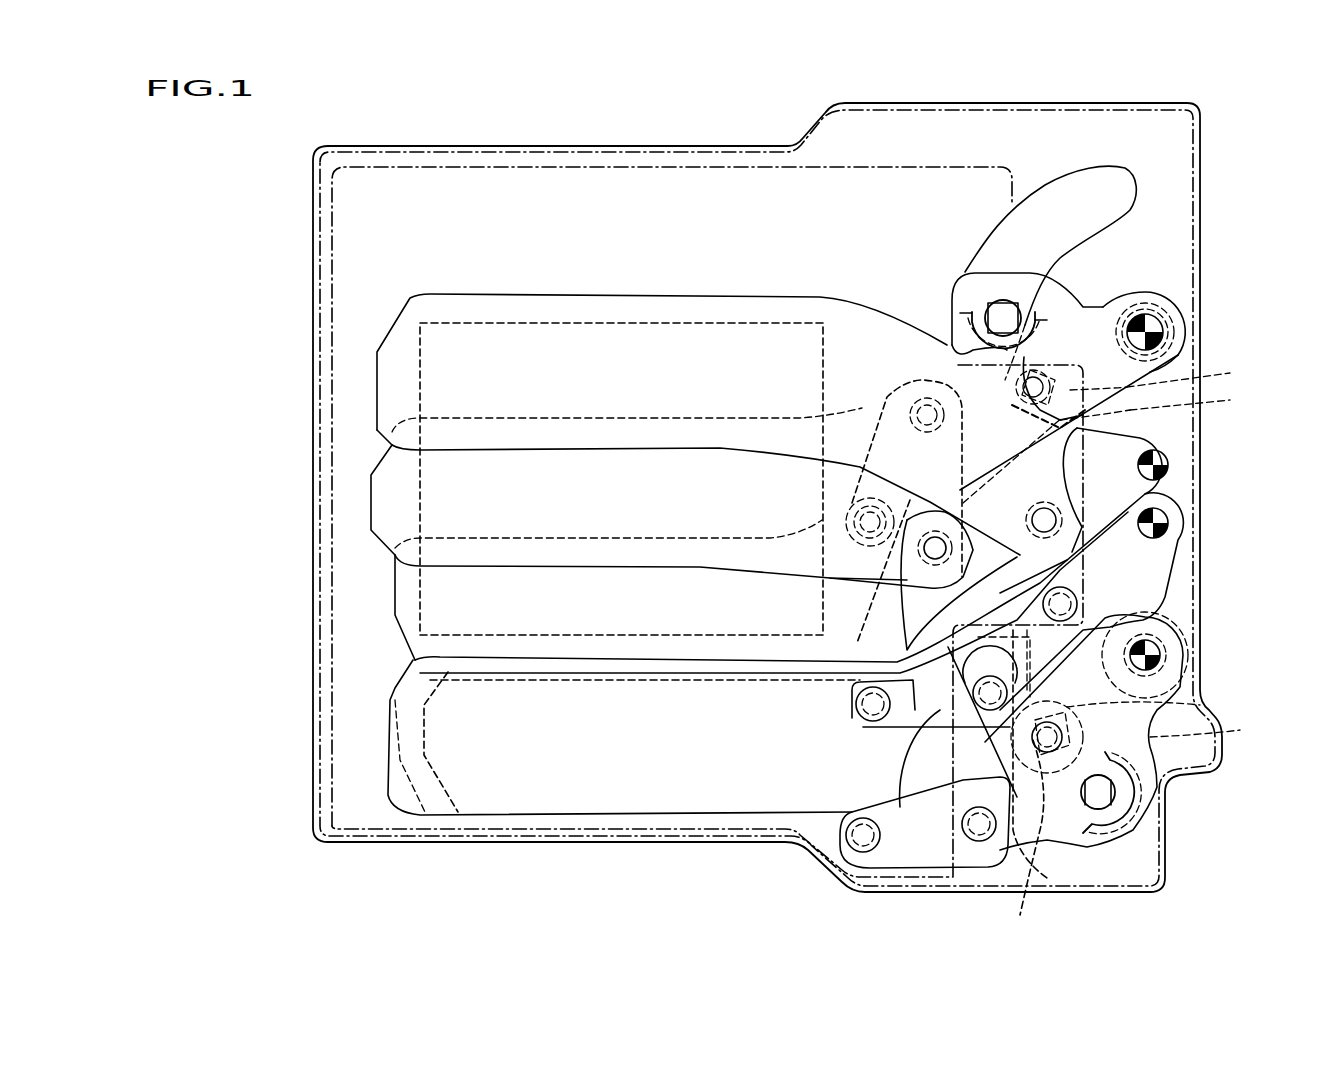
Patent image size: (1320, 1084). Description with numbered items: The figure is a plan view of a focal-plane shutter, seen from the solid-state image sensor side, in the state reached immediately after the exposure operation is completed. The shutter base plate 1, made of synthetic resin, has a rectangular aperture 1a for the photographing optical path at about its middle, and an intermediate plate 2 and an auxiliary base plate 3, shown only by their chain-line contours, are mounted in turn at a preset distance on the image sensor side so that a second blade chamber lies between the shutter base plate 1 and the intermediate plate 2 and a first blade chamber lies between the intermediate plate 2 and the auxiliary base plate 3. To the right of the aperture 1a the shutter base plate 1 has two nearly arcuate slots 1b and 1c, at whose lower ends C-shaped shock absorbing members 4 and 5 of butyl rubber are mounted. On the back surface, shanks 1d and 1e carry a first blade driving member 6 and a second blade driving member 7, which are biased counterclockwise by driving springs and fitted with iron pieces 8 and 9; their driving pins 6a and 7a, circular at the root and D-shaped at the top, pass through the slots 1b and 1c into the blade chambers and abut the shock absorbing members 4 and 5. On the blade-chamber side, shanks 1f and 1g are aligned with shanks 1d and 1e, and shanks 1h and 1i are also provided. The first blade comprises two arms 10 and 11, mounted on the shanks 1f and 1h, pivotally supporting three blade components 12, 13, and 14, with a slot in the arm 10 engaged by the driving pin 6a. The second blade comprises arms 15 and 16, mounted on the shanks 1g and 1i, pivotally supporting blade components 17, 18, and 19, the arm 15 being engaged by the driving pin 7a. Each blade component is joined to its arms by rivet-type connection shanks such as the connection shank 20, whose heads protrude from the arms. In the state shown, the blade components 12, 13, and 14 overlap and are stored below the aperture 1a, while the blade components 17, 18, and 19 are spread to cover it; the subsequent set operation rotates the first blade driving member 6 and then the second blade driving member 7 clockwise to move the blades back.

The shutter base plate 1 is at (613, 150).
The intermediate plate 2 is at (758, 170).
The auxiliary base plate 3 is at (680, 155).
The aperture 1a is at (505, 330).
The slot 1b is at (1035, 870).
The slot 1c is at (1062, 192).
The shank 1d is at (1163, 643).
The shank 1e is at (1163, 320).
The shank 1f is at (1152, 660).
The shank 1g is at (1162, 338).
The shank 1h is at (1163, 530).
The shank 1i is at (1163, 468).
The shock absorbing member 4 is at (1120, 845).
The shock absorbing member 5 is at (962, 292).
The first blade driving member 6 is at (1165, 712).
The driving pin 6a is at (1103, 790).
The second blade driving member 7 is at (1127, 387).
The driving pin 7a is at (1003, 317).
The iron piece 8 is at (1240, 730).
The iron piece 9 is at (1130, 410).
The arm 10 is at (915, 868).
The arm 11 is at (905, 745).
The blade component 12 is at (397, 690).
The blade component 13 is at (465, 765).
The blade component 14 is at (403, 740).
The arm 15 is at (1142, 294).
The arm 16 is at (1143, 440).
The blade component 17 is at (385, 385).
The blade component 18 is at (383, 482).
The blade component 19 is at (400, 590).
The connection shank 20 is at (1072, 300).